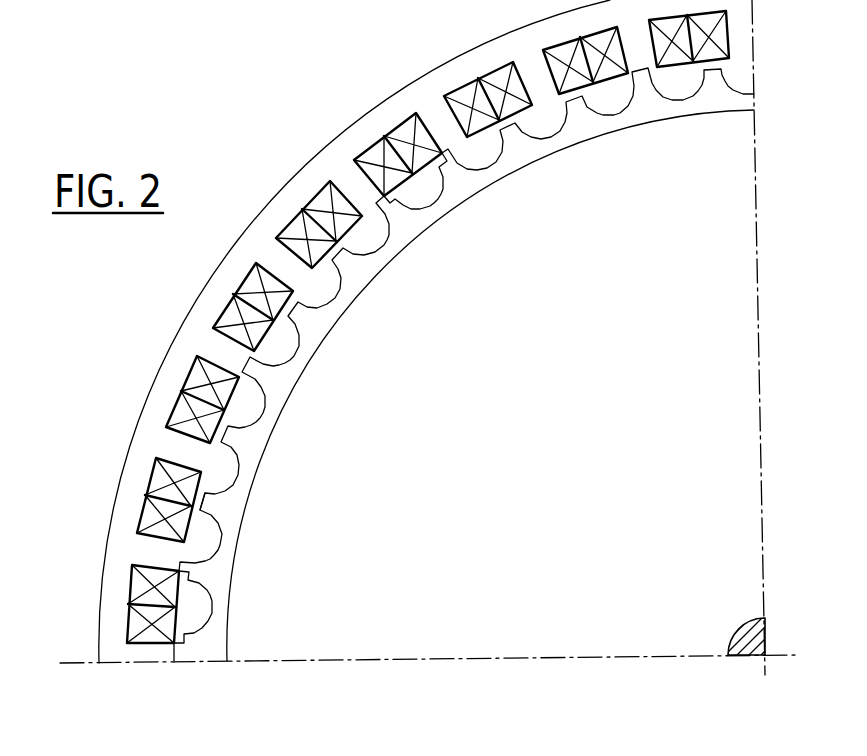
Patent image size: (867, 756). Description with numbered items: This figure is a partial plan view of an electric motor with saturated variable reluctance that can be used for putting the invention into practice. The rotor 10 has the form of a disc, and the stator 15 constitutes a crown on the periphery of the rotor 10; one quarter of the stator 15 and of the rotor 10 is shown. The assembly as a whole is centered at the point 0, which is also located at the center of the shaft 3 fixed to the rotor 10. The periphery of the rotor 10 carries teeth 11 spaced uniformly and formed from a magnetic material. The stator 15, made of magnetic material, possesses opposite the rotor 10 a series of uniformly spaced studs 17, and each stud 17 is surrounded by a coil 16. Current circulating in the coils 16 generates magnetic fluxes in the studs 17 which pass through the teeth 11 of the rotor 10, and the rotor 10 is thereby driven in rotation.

The center point 0 is at (765, 658).
The shaft 3 is at (766, 635).
The rotor 10 is at (377, 263).
The teeth 11 is at (390, 208).
The stator 15 is at (173, 365).
The coil 16 is at (187, 413).
The stud 17 is at (177, 450).